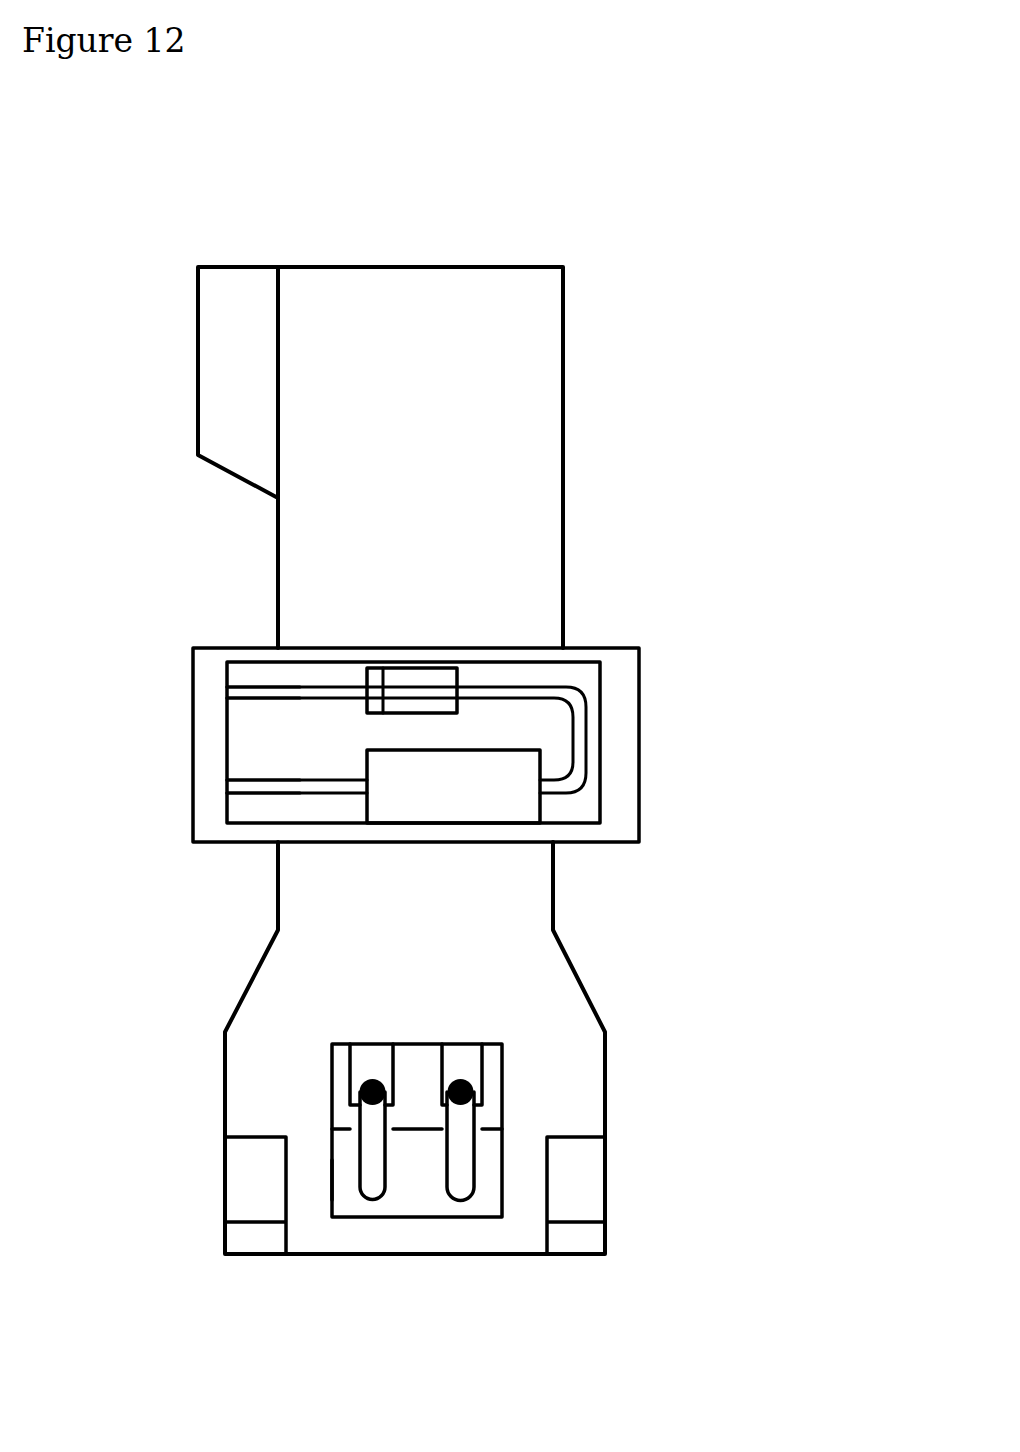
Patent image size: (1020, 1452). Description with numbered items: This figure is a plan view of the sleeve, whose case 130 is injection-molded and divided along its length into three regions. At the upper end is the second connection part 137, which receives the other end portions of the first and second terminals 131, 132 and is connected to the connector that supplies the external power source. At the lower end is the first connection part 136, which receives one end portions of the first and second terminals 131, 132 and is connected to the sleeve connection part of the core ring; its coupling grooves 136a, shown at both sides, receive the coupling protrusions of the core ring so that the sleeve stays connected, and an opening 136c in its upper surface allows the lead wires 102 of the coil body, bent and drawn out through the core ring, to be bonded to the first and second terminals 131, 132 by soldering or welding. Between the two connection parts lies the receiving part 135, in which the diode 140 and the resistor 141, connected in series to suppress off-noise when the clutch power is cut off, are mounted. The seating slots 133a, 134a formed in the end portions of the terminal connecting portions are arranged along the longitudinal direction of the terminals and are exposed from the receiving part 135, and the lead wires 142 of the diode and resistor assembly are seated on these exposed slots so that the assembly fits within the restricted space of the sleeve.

The second connection part 137 is at (415, 267).
The case 130 is at (678, 680).
The diode 140 is at (422, 676).
The resistor 141 is at (448, 797).
The lead wires of the diode 142 is at (567, 693).
The seating slot 133a is at (293, 688).
The seating slot 134a is at (288, 793).
The receiving part 135 is at (240, 739).
The first terminal 131 is at (367, 1063).
The second terminal 132 is at (472, 1068).
The lead wires 102 is at (460, 1165).
The first connection part 136 is at (492, 1242).
The coupling groove 136a is at (247, 1197).
The opening 136c is at (343, 1162).